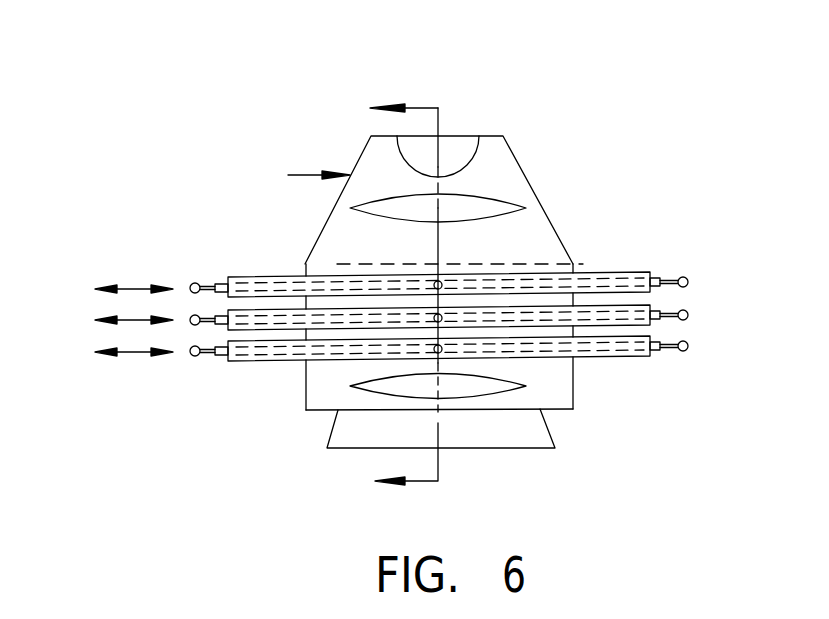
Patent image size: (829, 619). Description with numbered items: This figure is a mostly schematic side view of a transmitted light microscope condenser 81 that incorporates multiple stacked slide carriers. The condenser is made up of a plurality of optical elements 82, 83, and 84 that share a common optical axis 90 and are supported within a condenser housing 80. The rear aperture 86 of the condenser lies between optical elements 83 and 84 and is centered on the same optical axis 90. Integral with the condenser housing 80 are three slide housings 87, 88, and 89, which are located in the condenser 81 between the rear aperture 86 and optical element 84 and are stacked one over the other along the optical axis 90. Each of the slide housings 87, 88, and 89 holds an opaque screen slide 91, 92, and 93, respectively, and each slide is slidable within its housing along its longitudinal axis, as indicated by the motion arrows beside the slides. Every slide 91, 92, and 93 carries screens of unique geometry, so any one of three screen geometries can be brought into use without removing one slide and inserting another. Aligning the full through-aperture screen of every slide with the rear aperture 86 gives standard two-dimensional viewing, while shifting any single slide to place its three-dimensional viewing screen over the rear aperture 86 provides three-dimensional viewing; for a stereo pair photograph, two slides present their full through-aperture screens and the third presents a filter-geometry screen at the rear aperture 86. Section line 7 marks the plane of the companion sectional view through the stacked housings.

The section line 7- 7 is at (390, 293).
The condenser housing 80 is at (522, 170).
The transmitted light microscope condenser 81 is at (298, 176).
The optical element 82 is at (458, 134).
The optical element 83 is at (526, 206).
The optical element 84 is at (526, 383).
The rear aperture 86 is at (337, 264).
The slide housing 87 is at (638, 272).
The slide housing 88 is at (641, 305).
The slide housing 89 is at (641, 337).
The optical axis 90 is at (440, 432).
The opaque screen slide 91 is at (222, 285).
The opaque screen slide 92 is at (220, 323).
The opaque screen slide 93 is at (222, 353).